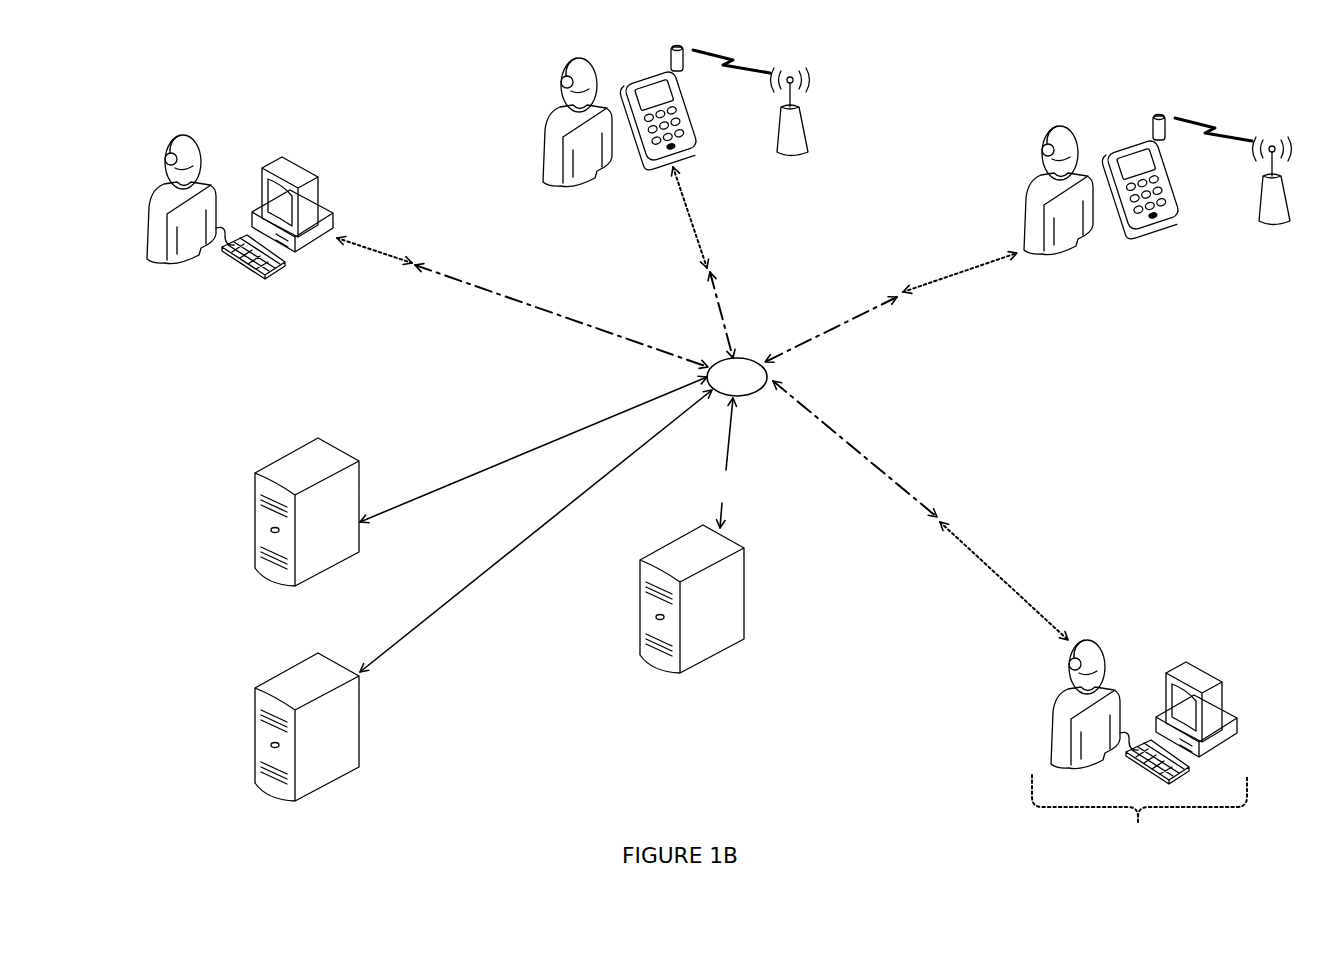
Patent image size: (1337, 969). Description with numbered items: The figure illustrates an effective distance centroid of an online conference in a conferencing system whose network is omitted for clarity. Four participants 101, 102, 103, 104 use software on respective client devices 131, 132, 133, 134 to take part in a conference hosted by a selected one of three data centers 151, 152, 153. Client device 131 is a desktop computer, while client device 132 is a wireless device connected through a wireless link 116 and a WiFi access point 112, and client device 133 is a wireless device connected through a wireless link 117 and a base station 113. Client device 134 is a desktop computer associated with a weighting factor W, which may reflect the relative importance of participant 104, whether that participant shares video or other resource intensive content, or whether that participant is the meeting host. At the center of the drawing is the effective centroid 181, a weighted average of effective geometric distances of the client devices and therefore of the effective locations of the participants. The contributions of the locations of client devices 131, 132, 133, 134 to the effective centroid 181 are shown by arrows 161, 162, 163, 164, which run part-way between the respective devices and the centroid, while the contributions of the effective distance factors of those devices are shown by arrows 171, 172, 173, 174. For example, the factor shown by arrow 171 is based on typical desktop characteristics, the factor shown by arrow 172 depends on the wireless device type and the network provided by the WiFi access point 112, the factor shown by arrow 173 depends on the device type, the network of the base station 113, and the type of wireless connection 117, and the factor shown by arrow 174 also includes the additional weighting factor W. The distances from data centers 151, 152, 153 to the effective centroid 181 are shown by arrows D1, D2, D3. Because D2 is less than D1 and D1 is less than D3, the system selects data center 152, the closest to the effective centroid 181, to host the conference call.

The participant 101 is at (165, 190).
The participant 102 is at (560, 107).
The participant 103 is at (1041, 175).
The participant 104 is at (1069, 696).
The client device 131 is at (300, 166).
The client device 132 is at (664, 63).
The client device 133 is at (1146, 132).
The client device 134 is at (1205, 676).
The WiFi access point 112 is at (799, 152).
The base station 113 is at (1266, 224).
The wireless link 116 is at (755, 66).
The wireless link 117 is at (1206, 119).
The data center 151 is at (362, 471).
The data center 152 is at (720, 651).
The data center 153 is at (360, 719).
The arrow 161 is at (557, 312).
The arrow 162 is at (711, 289).
The arrow 163 is at (826, 334).
The arrow 164 is at (876, 465).
The arrow 171 is at (394, 256).
The arrow 172 is at (700, 251).
The arrow 173 is at (942, 280).
The arrow 174 is at (1031, 601).
The effective centroid 181 is at (756, 390).
The arrow D1 is at (533, 449).
The arrow D2 is at (727, 463).
The arrow D3 is at (536, 531).
The weighting factor W is at (1139, 816).